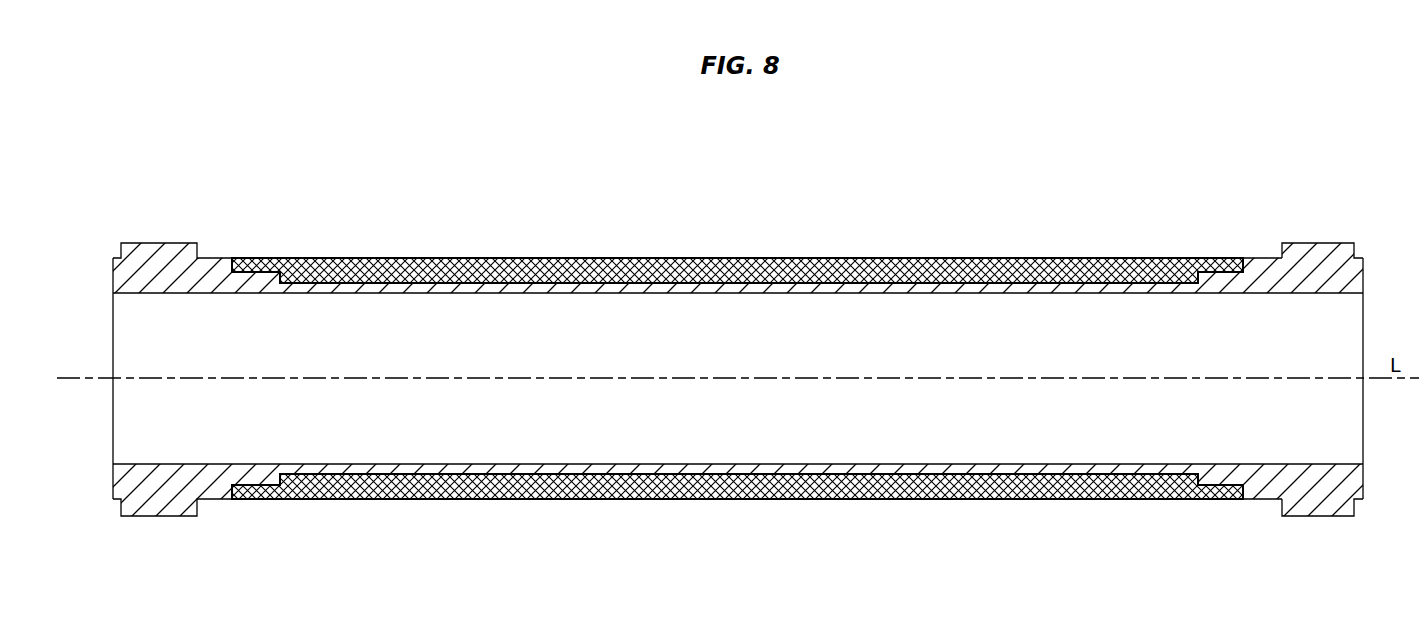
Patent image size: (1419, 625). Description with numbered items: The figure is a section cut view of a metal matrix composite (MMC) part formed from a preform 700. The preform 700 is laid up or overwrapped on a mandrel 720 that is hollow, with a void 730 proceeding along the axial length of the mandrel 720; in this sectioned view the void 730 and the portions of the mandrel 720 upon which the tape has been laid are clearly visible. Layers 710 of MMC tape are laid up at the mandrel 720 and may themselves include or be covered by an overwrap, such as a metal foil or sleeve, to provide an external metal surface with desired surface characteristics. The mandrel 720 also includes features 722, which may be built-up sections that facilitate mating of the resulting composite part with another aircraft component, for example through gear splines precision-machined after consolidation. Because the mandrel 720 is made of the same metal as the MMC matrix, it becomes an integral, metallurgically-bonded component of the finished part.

The preform 700 is at (754, 321).
The layers of MMC tape 710 is at (1113, 258).
The mandrel 720 is at (570, 294).
The features 722 is at (1329, 232).
The void 730 is at (1345, 422).